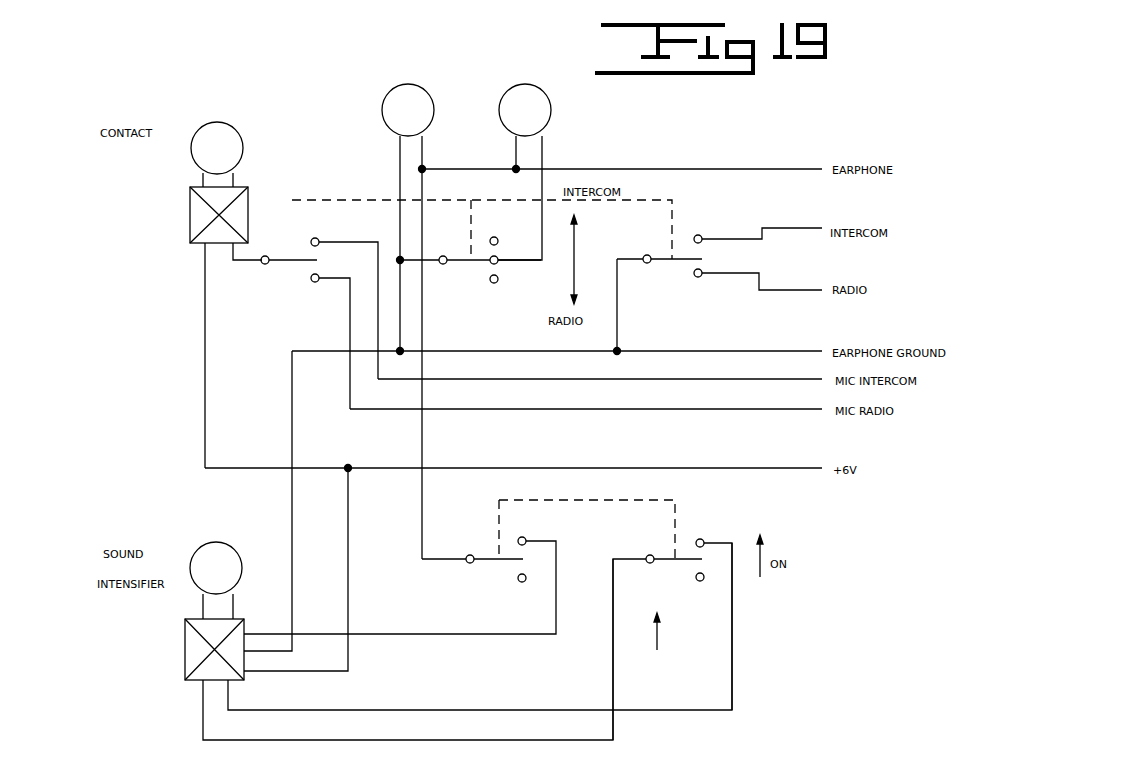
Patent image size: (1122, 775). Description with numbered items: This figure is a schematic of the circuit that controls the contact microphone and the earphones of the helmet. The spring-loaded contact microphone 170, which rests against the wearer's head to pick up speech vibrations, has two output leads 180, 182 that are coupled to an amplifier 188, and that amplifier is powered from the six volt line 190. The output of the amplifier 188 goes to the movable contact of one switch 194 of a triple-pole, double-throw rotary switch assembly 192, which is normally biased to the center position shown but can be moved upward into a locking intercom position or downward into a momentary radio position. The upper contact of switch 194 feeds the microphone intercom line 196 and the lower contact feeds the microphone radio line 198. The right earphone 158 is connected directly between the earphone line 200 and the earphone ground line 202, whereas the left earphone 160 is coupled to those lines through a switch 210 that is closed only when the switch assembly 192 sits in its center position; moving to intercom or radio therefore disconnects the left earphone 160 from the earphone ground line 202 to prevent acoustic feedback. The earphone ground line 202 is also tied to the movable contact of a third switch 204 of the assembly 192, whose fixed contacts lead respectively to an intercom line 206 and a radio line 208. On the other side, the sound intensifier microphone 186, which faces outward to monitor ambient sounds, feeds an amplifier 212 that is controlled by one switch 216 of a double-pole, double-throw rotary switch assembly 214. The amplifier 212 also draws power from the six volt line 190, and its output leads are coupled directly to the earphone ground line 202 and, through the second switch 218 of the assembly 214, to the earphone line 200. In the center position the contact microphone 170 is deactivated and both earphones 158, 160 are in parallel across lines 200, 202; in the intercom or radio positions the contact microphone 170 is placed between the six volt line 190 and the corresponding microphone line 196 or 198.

The right earphone 158 is at (414, 85).
The left earphone 160 is at (532, 85).
The contact microphone 170 is at (232, 122).
The output lead 180 is at (196, 178).
The output lead 182 is at (238, 180).
The sound intensifier microphone 186 is at (228, 545).
The amplifier 188 is at (188, 228).
The 6 volt line 190 is at (778, 470).
The triple-pole, double-throw rotary switch assembly 192 is at (638, 287).
The switch 194 is at (283, 263).
The microphone intercom line 196 is at (728, 379).
The microphone radio line 198 is at (752, 410).
The earphone line 200 is at (675, 168).
The earphone ground line 202 is at (742, 351).
The third switch 204 is at (660, 255).
The intercom line 206 is at (792, 228).
The radio line 208 is at (793, 290).
The switch 210 is at (465, 264).
The amplifier 212 is at (183, 662).
The double-pole, double-throw rotary switch assembly 214 is at (672, 641).
The switch 216 is at (653, 564).
The second switch 218 is at (490, 563).